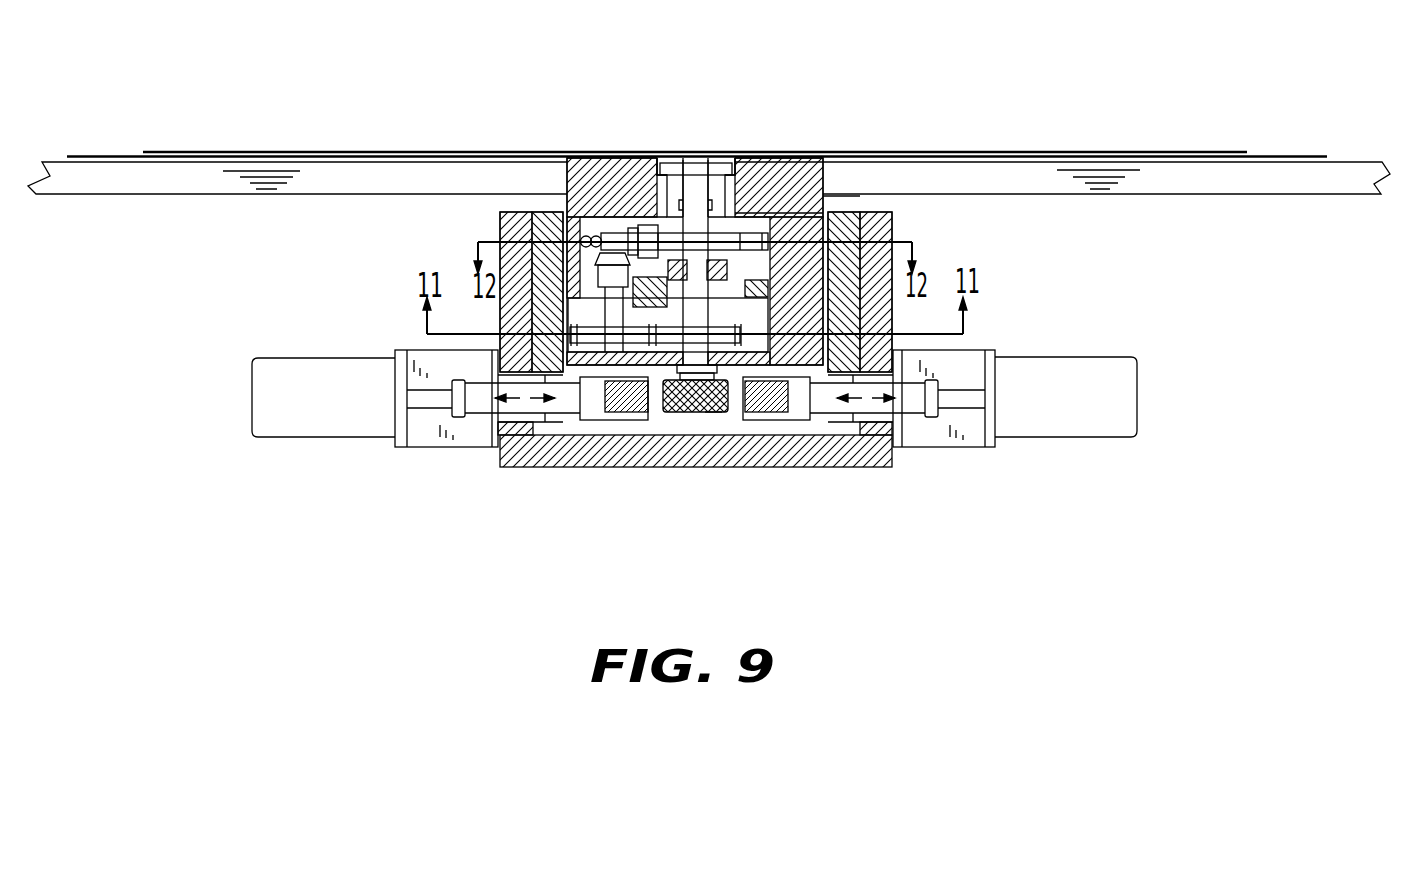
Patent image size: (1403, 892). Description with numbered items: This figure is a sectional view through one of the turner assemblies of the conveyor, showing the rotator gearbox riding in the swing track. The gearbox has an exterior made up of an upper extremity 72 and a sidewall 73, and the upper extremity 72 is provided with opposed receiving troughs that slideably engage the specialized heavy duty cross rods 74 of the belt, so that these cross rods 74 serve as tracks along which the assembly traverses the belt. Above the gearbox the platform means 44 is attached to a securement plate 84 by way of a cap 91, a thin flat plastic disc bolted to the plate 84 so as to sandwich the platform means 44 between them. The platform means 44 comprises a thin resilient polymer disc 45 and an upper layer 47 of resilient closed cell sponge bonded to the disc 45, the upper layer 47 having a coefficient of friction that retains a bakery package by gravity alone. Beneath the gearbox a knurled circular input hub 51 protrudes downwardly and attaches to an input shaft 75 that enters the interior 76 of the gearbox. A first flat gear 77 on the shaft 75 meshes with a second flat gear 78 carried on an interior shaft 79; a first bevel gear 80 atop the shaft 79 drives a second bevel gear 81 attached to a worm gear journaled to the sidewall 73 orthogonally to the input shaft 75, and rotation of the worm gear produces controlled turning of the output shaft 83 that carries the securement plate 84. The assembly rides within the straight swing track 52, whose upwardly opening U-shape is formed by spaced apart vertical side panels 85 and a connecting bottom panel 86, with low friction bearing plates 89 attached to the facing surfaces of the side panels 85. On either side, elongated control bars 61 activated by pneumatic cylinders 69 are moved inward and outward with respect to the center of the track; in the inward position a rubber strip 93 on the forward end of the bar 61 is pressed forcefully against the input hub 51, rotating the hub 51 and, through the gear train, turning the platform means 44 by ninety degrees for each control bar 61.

The platform means 44 is at (692, 100).
The disc 45 is at (1284, 153).
The upper layer 47 is at (1128, 149).
The knurled circular input hub 51 is at (712, 417).
The straight swing track 52 is at (885, 488).
The control bar 61 is at (805, 400).
The pneumatic cylinder 69 is at (332, 427).
The upper extremity 72 is at (767, 168).
The sidewall 73 is at (813, 178).
The specialized heavy duty cross rod 74 is at (1269, 185).
The input shaft 75 is at (695, 360).
The interior 76 is at (588, 316).
The first flat gear 77 is at (740, 332).
The second flat gear 78 is at (633, 340).
The interior shaft 79 is at (612, 293).
The first bevel gear 80 is at (618, 257).
The second bevel gear 81 is at (638, 225).
The output shaft 83 is at (675, 160).
The securement plate 84 is at (710, 167).
The vertical side panel 85 is at (893, 313).
The bottom panel 86 is at (707, 412).
The low friction bearing plate 89 is at (850, 194).
The cap 91 is at (696, 192).
The rubber strip 93 is at (770, 417).